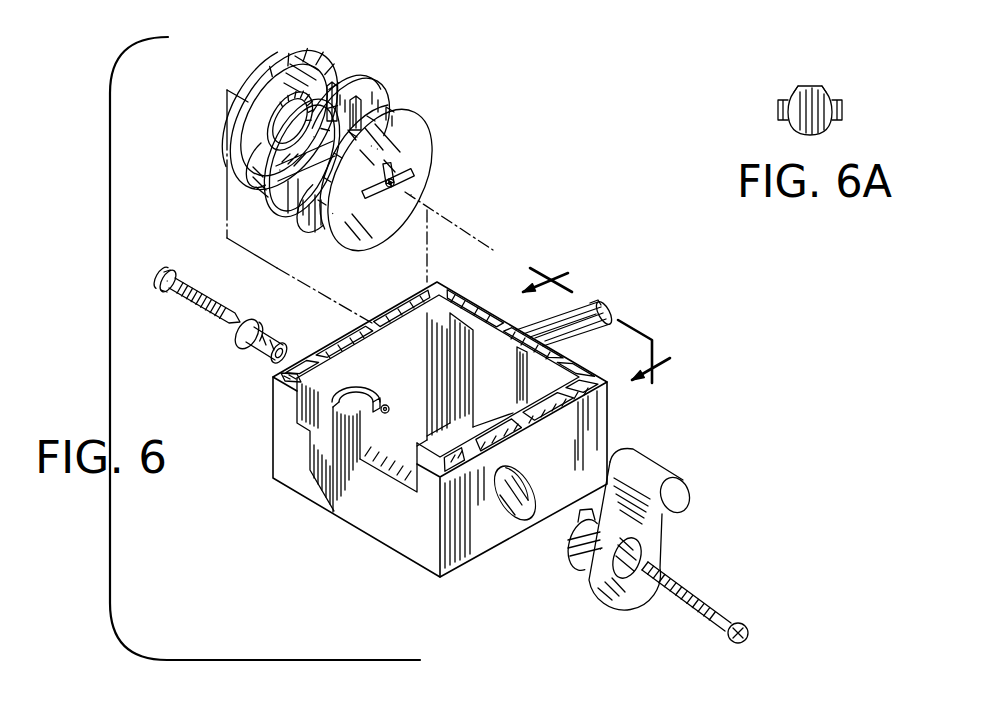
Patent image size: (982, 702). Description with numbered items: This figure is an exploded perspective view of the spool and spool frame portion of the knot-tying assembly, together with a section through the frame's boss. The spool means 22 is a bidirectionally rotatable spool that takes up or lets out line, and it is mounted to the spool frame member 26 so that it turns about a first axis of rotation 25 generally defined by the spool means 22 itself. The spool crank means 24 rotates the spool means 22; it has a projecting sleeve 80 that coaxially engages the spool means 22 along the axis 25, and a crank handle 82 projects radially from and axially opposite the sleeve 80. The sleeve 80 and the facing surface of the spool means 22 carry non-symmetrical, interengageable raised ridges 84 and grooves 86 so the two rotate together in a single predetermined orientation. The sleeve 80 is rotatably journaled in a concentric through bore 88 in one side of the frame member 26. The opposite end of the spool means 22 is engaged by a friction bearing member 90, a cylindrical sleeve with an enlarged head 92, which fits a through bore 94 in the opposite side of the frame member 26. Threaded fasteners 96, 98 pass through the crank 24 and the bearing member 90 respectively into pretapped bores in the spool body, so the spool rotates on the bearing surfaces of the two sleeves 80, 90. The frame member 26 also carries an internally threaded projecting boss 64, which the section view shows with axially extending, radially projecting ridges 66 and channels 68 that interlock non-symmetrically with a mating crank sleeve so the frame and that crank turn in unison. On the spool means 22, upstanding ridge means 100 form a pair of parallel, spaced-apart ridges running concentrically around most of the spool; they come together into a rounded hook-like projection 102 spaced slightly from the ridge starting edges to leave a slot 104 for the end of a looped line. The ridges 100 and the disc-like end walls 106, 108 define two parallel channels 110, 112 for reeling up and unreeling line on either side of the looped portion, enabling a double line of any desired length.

In FIG. 6, the spool means 22 is at (427, 149).
In FIG. 6, the spool crank means 24 is at (681, 534).
In FIG. 6, the first axis of rotation 25 is at (463, 220).
In FIG. 6, the spool frame member 26 is at (413, 551).
In FIG. 6, the projecting boss 64 is at (618, 308).
In FIG. 6A, the projecting boss 64 is at (766, 120).
In FIG. 6, the ridges 66 is at (557, 320).
In FIG. 6A, the ridges 66 is at (813, 80).
In FIG. 6, the channels 68 is at (606, 311).
In FIG. 6A, the channels 68 is at (793, 90).
In FIG. 6, the projecting sleeve 80 is at (572, 563).
In FIG. 6, the crank handle 82 is at (663, 474).
In FIG. 6, the raised ridges 84 is at (400, 184).
In FIG. 6, the grooves 86 is at (567, 543).
In FIG. 6, the through bore 88 is at (533, 472).
In FIG. 6, the friction bearing member 90 is at (267, 354).
In FIG. 6, the enlarged head 92 is at (262, 320).
In FIG. 6, the through bore 94 is at (383, 398).
In FIG. 6, the threaded fastener 96 is at (197, 309).
In FIG. 6, the threaded fastener 98 is at (687, 617).
In FIG. 6, the upstanding ridge means 100 is at (368, 92).
In FIG. 6, the hook-like projection 102 is at (326, 100).
In FIG. 6, the slot 104 is at (355, 125).
In FIG. 6, the disc-like end wall 106 is at (430, 127).
In FIG. 6, the disc-like end wall 108 is at (279, 68).
In FIG. 6, the channel 110 is at (299, 206).
In FIG. 6, the channel 112 is at (297, 208).